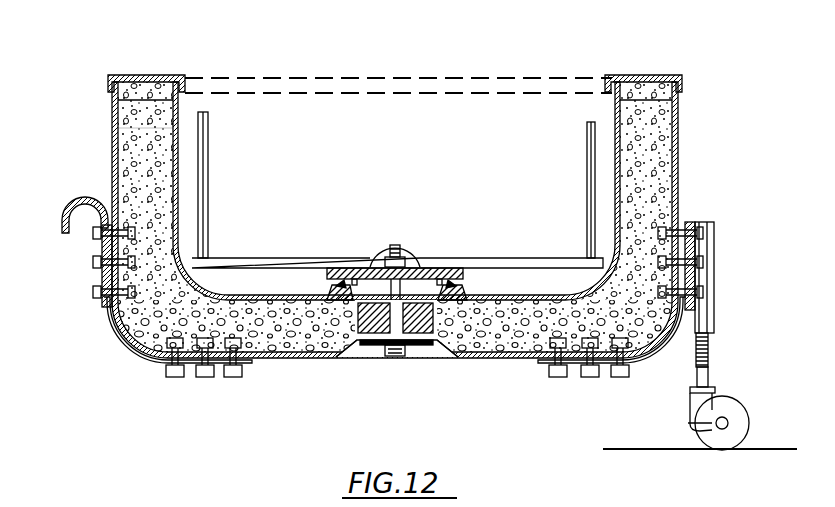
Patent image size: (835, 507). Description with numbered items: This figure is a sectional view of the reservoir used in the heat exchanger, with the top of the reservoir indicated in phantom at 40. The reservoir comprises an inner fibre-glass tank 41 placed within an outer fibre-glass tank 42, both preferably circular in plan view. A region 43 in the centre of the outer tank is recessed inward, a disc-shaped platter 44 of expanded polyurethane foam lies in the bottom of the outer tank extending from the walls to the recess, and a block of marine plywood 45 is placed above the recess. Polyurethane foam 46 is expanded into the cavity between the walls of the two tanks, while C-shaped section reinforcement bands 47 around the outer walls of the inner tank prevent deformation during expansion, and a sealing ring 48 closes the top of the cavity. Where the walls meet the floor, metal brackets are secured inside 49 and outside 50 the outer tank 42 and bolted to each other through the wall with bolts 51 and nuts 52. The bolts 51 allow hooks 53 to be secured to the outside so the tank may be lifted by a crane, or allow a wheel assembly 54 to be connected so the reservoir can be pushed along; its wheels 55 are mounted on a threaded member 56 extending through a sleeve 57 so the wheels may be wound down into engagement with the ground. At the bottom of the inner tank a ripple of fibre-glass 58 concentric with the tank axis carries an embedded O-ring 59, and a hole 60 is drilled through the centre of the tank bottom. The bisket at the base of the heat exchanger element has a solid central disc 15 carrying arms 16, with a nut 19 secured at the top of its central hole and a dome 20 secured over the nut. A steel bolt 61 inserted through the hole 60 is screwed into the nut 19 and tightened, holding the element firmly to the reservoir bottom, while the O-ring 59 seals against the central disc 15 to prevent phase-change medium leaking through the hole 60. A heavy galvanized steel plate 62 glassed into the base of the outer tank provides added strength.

The central disc 15 is at (447, 260).
The arms 16 is at (507, 265).
The nut 19 is at (415, 260).
The dome 20 is at (398, 235).
The cover (phantom) 40 is at (483, 74).
The inner fibre-glass tank 41 is at (180, 153).
The outer fibre-glass tank 42 is at (130, 153).
The region 43 is at (352, 362).
The disc-shaped platter 44 is at (267, 343).
The block of marine plywood 45 is at (430, 333).
The polyurethane foam 46 is at (133, 107).
The C-shaped section reinforcement bands 47 is at (133, 132).
The sealing ring 48 is at (690, 82).
The inner brackets 49 is at (138, 358).
The outer brackets 50 is at (110, 333).
The bolts 51 is at (680, 223).
The nuts 52 is at (97, 262).
The hooks 53 is at (67, 207).
The wheel assembly 54 is at (700, 336).
The wheels 55 is at (735, 408).
The threaded member 56 is at (708, 358).
The sleeve 57 is at (713, 317).
The ripple of fibre-glass 58 is at (323, 290).
The O-ring 59 is at (340, 270).
The hole 60 is at (385, 359).
The steel bolt 61 is at (372, 347).
The galvanized steel plate 62 is at (418, 363).